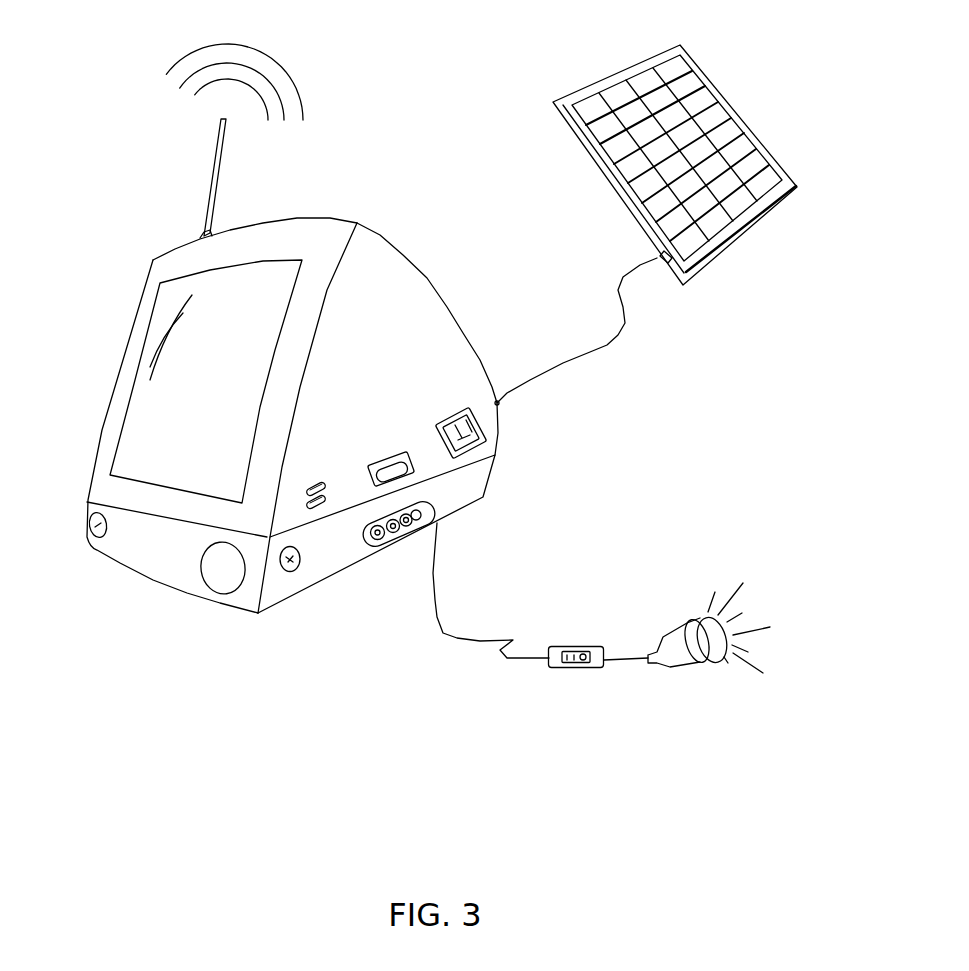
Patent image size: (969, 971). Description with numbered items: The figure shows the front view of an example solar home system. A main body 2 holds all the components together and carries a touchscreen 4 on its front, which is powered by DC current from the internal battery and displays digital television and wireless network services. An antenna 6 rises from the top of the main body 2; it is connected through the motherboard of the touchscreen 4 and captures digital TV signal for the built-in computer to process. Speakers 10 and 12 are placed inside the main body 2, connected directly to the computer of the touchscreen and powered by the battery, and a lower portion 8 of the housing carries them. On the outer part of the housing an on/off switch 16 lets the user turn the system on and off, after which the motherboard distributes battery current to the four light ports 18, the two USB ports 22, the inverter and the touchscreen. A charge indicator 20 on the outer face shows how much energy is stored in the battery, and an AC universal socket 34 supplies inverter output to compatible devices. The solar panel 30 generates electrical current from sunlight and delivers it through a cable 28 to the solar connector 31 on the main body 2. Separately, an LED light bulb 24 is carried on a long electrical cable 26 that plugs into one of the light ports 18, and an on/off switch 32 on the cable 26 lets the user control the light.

The main body 2 is at (102, 432).
The touchscreen 4 is at (167, 297).
The antenna 6 is at (217, 163).
The base portion 8 is at (88, 510).
The speaker 10 is at (98, 528).
The speaker 12 is at (227, 575).
The on/off switch 16 is at (293, 572).
The light ports 18 is at (368, 547).
The charge indicator 20 is at (393, 455).
The USB ports 22 is at (312, 483).
The LED light bulbs 24 is at (693, 618).
The electrical cables 26 is at (437, 600).
The cable 28 is at (597, 350).
The solar panel 30 is at (740, 112).
The solar connector 31 is at (497, 403).
The on/off switch of the light cables 32 is at (585, 670).
The AC universal socket 34 is at (495, 453).